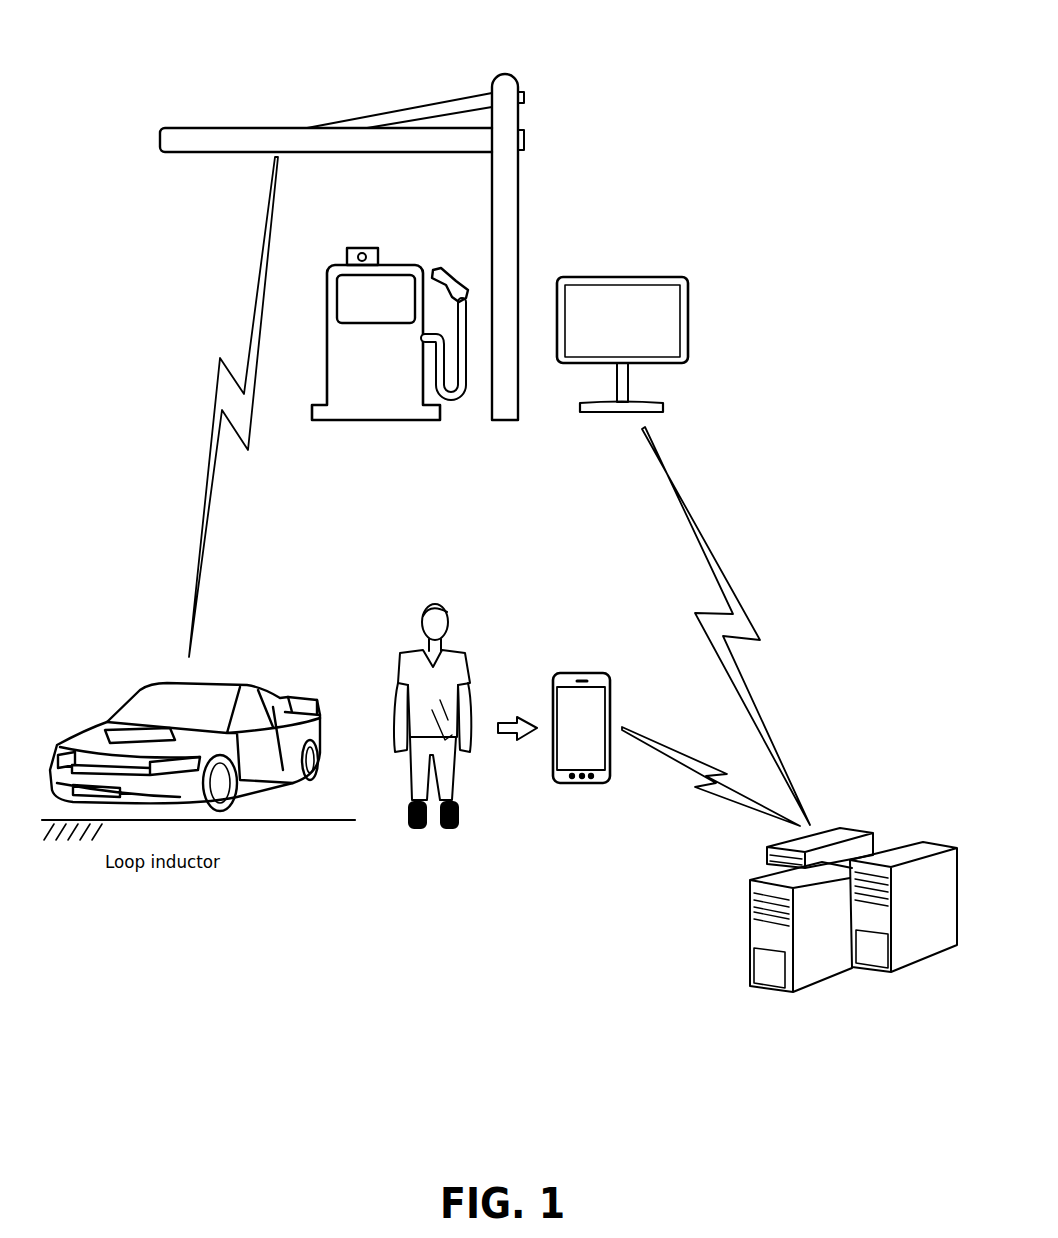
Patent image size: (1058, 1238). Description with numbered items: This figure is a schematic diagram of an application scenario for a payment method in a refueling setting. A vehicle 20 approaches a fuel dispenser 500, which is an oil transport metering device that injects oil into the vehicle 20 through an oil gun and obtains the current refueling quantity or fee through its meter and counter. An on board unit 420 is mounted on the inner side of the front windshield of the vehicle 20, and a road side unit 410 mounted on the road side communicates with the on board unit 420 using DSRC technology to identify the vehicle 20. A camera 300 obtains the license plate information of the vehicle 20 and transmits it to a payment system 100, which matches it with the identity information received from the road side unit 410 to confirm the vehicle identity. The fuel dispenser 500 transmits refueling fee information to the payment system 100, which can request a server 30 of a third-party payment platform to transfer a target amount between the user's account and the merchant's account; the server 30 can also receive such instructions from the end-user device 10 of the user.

The road side unit (RSU) 410 is at (283, 87).
The on board unit (OBU) 420 is at (233, 645).
The camera 300 is at (373, 248).
The fuel dispenser 500 is at (357, 421).
The payment system 100 is at (668, 278).
The vehicle 20 is at (98, 722).
The end-user device 10 is at (583, 673).
The server 30 is at (928, 842).